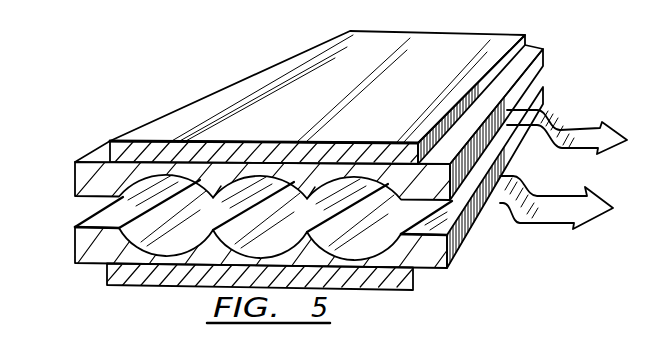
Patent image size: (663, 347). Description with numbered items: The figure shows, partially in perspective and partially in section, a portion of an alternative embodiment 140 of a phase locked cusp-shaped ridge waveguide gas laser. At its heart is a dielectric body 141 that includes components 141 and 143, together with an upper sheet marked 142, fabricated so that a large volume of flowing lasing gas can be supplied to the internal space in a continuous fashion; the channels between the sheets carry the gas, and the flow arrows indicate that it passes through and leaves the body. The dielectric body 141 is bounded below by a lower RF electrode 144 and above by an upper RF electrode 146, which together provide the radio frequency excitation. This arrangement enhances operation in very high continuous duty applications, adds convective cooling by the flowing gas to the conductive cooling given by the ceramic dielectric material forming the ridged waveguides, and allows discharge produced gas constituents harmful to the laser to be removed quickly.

The alternative embodiment 140 is at (168, 80).
The dielectric body 141 is at (55, 162).
The upper core sheet 142 is at (88, 158).
The component of dielectric body 143 is at (80, 268).
The lower RF electrode 144 is at (133, 287).
The upper RF electrode 146 is at (285, 70).